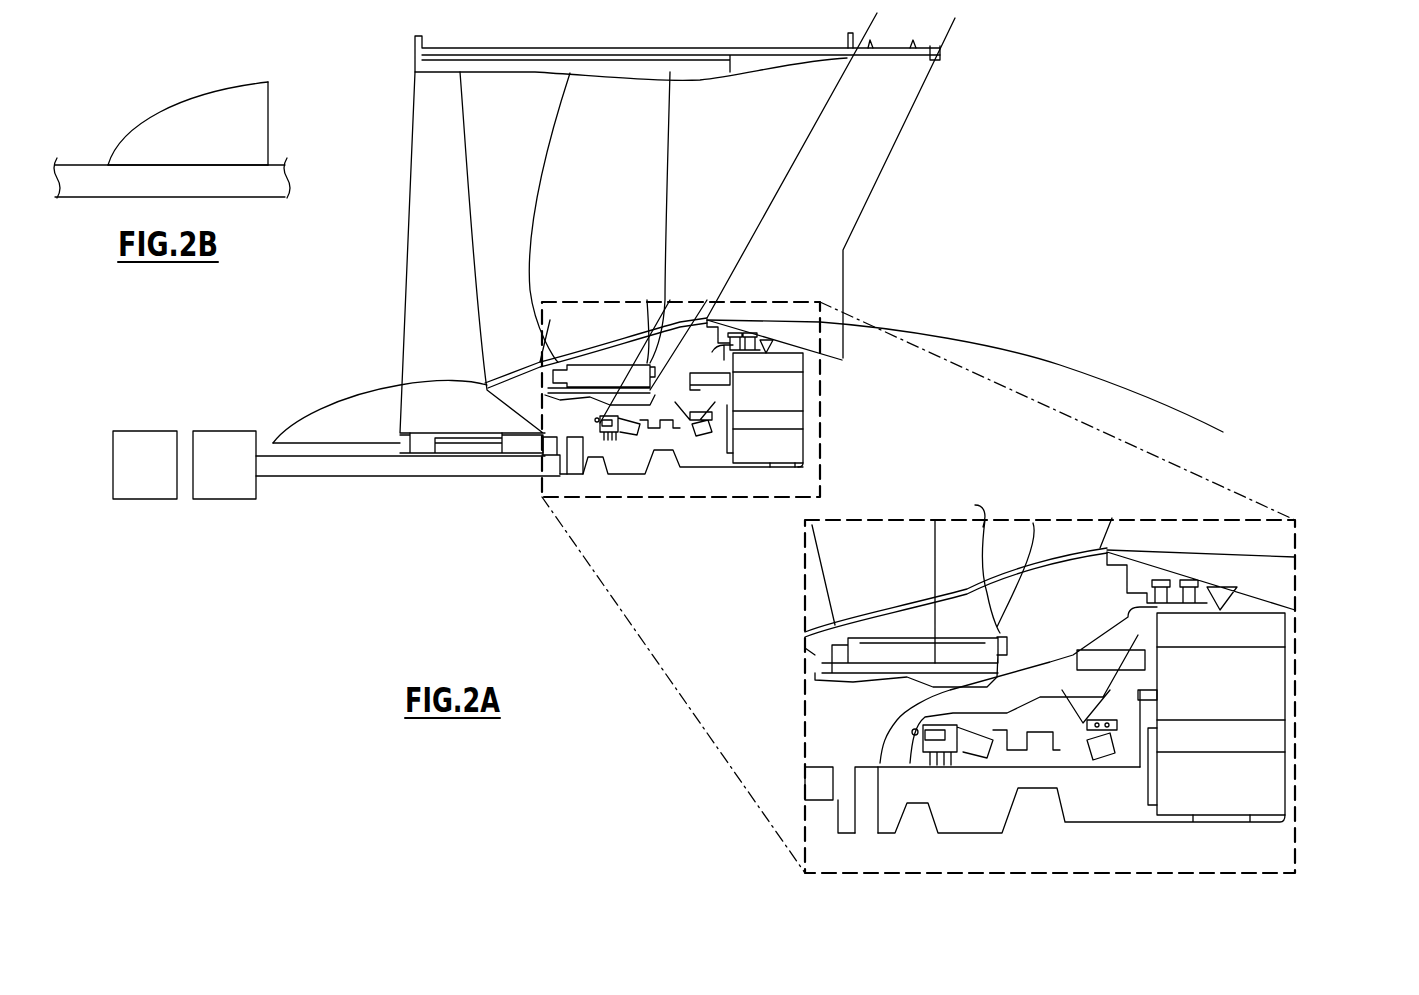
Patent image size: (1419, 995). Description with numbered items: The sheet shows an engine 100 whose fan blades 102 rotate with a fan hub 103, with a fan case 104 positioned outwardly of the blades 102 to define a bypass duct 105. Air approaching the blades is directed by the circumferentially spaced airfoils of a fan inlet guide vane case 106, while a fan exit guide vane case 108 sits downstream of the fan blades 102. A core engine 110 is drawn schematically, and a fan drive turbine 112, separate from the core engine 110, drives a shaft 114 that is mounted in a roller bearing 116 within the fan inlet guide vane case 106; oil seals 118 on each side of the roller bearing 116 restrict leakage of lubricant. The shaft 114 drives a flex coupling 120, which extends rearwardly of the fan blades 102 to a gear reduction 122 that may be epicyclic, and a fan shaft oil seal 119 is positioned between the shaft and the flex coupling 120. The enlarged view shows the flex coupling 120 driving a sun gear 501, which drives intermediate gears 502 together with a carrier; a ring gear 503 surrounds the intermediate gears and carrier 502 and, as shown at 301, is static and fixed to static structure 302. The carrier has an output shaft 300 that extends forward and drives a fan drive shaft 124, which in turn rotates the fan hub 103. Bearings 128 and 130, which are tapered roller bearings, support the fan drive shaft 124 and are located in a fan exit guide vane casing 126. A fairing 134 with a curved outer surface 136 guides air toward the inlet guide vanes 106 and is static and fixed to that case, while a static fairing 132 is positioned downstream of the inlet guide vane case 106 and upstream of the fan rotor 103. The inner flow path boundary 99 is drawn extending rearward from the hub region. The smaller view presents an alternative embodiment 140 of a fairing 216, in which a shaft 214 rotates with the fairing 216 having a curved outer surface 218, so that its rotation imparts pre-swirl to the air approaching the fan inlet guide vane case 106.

In FIG. 2A, the inner flow path boundary 99 is at (950, 335).
In FIG. 2A, the engine 100 is at (985, 233).
In FIG. 2A, the fan blades 102 is at (627, 112).
In FIG. 2A, the fan hub 103 is at (640, 345).
In FIG. 2A, the fan case 104 is at (488, 58).
In FIG. 2A, the bypass duct 105 is at (740, 137).
In FIG. 2A, the fan inlet guide vane case 106 is at (428, 147).
In FIG. 2A, the fan exit guide vane case 108 is at (873, 145).
In FIG. 2A, the core engine 110 is at (130, 443).
In FIG. 2A, the fan drive turbine 112 is at (225, 487).
In FIG. 2A, the shaft 114 is at (525, 467).
In FIG. 2A, the roller bearing 116 is at (465, 440).
In FIG. 2A, the oil seals 118 is at (405, 445).
In FIG. 2A, the fan shaft oil seal 119 is at (570, 440).
In FIG. 2A, the flex coupling 120 is at (720, 474).
In FIG. 2A, the gear reduction 122 is at (870, 437).
In FIG. 2A, the fan drive shaft 124 is at (700, 440).
In FIG. 2A, the fan exit guide vane casing 126 is at (648, 302).
In FIG. 2A, the bearing 128 is at (712, 428).
In FIG. 2A, the bearing 130 is at (630, 440).
In FIG. 2A, the static fairing 132 is at (515, 365).
In FIG. 2A, the fairing 134 is at (300, 413).
In FIG. 2A, the curved outer surface 136 is at (345, 383).
In FIG. 2B, the alternative embodiment 140 is at (108, 100).
In FIG. 2B, the shaft 214 is at (100, 187).
In FIG. 2B, the fairing 216 is at (185, 120).
In FIG. 2B, the curved outer surface 218 is at (218, 80).
In FIG. 2A, the output shaft 300 is at (745, 377).
In FIG. 2A, the ring gear fixing 301 is at (667, 303).
In FIG. 2A, the static structure 302 is at (680, 427).
In FIG. 2A, the sun gear 501 is at (790, 452).
In FIG. 2A, the intermediate gears 502 is at (1258, 703).
In FIG. 2A, the ring gear 503 is at (1270, 628).